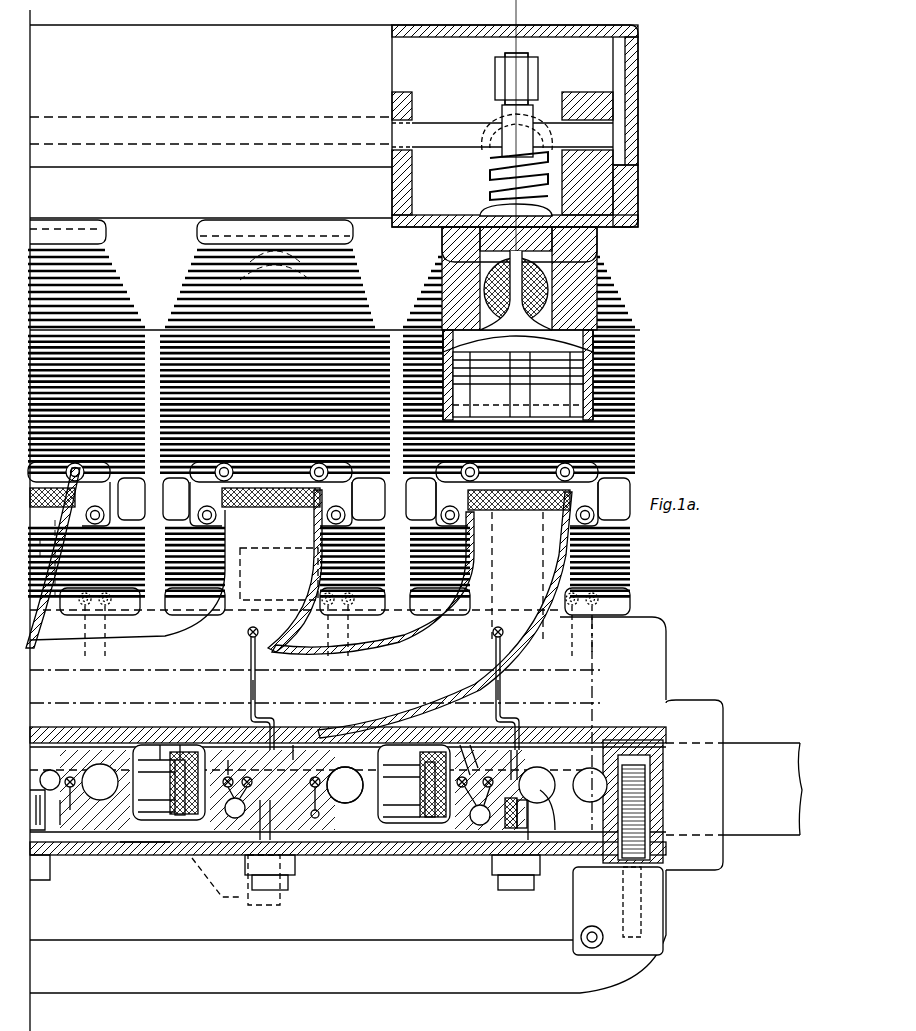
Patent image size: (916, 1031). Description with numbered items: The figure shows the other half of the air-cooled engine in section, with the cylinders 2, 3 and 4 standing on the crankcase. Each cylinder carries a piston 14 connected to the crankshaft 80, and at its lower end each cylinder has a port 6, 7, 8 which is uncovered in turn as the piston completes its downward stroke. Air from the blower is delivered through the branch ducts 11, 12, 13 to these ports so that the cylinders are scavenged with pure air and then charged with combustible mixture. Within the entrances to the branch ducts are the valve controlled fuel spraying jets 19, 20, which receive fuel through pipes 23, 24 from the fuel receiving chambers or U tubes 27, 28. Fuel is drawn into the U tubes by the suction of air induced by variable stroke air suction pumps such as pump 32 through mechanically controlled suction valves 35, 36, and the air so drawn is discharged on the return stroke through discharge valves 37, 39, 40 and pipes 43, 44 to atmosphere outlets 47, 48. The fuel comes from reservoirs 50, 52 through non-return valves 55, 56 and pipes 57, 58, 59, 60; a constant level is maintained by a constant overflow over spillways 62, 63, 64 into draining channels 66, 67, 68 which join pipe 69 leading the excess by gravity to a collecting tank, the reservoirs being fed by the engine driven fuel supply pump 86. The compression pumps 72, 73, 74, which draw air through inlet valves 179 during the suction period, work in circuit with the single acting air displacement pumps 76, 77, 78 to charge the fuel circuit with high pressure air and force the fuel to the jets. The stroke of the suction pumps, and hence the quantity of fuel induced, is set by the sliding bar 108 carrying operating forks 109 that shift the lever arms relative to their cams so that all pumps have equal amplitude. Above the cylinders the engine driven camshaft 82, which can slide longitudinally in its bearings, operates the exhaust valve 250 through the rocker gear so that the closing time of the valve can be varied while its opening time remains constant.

The cylinder 2 is at (78, 298).
The cylinder 3 is at (222, 282).
The cylinder 4 is at (456, 268).
The exhaust valve 250 is at (445, 305).
The camshaft 82 is at (460, 126).
The piston 14 is at (600, 392).
The port 6 is at (53, 558).
The port 7 is at (176, 570).
The port 8 is at (422, 614).
The branch duct 11 is at (41, 560).
The branch duct 12 is at (279, 574).
The branch duct 13 is at (517, 576).
The fuel spraying jet 19 is at (250, 688).
The fuel spraying jet 20 is at (495, 688).
The pipe 23 is at (250, 694).
The air displacement pump 77 is at (293, 745).
The inlet valve 179 is at (570, 760).
The compression pump 73 is at (352, 770).
The compression pump 72 is at (150, 755).
The sliding bar 108 is at (395, 805).
The air displacement pump 76 is at (53, 768).
The atmosphere outlet 47 is at (175, 755).
The pipe 43 is at (200, 758).
The discharge valve 37 is at (226, 760).
The suction valve 35 is at (246, 775).
The discharge valve 39 is at (226, 804).
The spillway 62 is at (80, 796).
The atmosphere outlet 48 is at (470, 740).
The pipe 24 is at (503, 696).
The discharge valve 40 is at (460, 776).
The air suction pump 32 is at (465, 760).
The pipe 44 is at (486, 775).
The fuel receiving chamber 28 is at (518, 760).
The suction valve 36 is at (486, 785).
The spillway 63 is at (325, 795).
The draining pipe 67 is at (325, 820).
The air displacement pump 78 is at (590, 740).
The compression pump 74 is at (597, 770).
The crankshaft 80 is at (745, 748).
The fuel supply pump 86 is at (662, 900).
The operating fork 109 is at (185, 815).
The pipe 58 is at (40, 830).
The draining pipe 66 is at (62, 828).
The pipe 69 is at (150, 852).
The reservoir 50 is at (40, 855).
The fuel receiving chamber 27 is at (232, 900).
The pipe 57 is at (300, 862).
The non-return valve 55 is at (270, 845).
The pipe 59 is at (280, 845).
The non-return valve 56 is at (505, 818).
The reservoir 52 is at (520, 820).
The pipe 60 is at (512, 878).
The draining pipe 68 is at (528, 845).
The spillway 64 is at (552, 840).